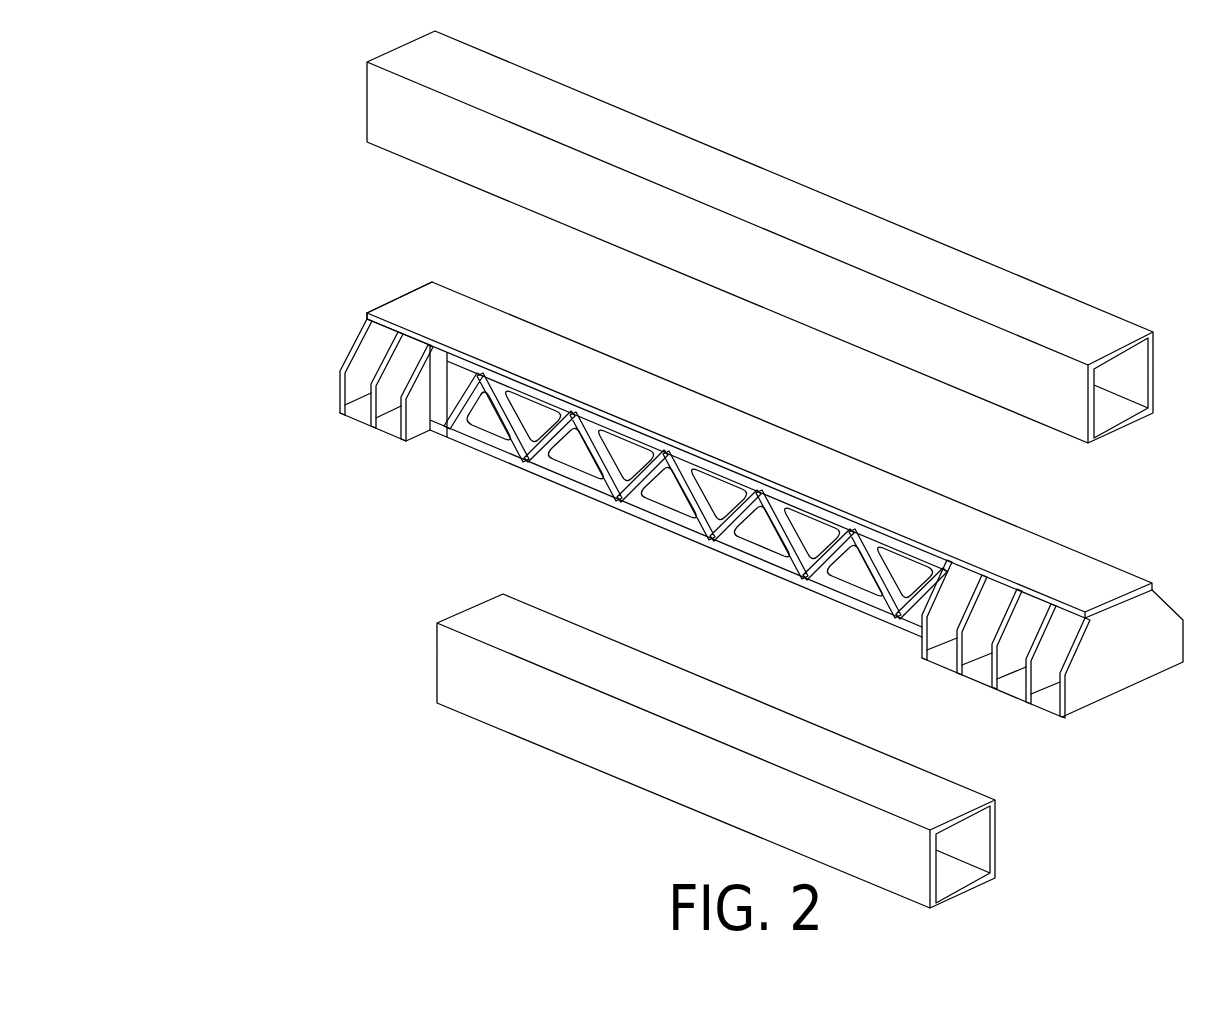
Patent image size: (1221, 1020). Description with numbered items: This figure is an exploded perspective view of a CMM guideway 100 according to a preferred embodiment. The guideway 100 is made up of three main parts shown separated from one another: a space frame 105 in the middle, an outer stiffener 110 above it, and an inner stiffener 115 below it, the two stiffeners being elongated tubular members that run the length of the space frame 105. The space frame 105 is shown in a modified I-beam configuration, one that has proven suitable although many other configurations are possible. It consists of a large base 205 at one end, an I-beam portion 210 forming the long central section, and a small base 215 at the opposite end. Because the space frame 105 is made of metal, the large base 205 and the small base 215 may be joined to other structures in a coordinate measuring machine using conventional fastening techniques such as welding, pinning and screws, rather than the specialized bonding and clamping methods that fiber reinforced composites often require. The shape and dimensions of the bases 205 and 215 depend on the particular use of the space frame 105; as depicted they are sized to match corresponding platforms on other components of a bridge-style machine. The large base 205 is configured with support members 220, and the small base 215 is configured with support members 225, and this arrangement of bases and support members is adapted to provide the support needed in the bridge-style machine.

The CMM guideway 100 is at (1131, 130).
The space frame 105 is at (285, 365).
The outer stiffener 110 is at (340, 97).
The inner stiffener 115 is at (380, 628).
The large base 205 is at (1157, 570).
The I-beam portion 210 is at (1025, 522).
The small base 215 is at (502, 297).
The support members 220 is at (965, 635).
The support members 225 is at (397, 432).